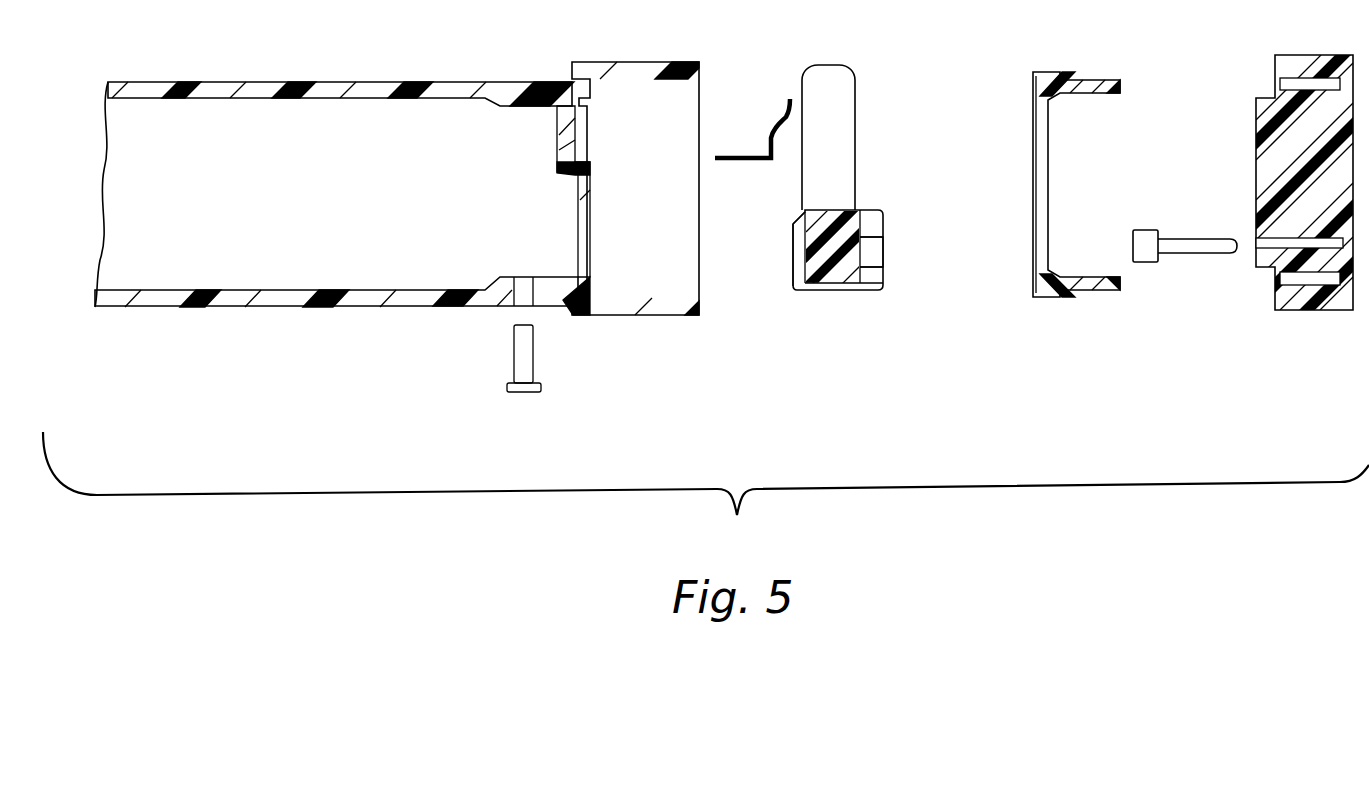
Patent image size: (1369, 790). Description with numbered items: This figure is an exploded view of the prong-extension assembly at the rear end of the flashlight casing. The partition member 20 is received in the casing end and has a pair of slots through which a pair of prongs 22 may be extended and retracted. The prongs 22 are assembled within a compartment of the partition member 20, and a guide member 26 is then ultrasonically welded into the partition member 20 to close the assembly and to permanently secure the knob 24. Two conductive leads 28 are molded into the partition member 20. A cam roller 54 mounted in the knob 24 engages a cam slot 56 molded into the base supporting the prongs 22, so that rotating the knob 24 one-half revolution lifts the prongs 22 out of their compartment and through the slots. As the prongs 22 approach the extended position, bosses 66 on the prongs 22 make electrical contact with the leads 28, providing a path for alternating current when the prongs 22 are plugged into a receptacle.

The partition member 20 is at (320, 80).
The prongs 22 is at (820, 75).
The knob 24 is at (1293, 53).
The guide member 26 is at (1070, 77).
The conductive leads 28 is at (743, 153).
The cam roller 54 is at (1195, 210).
The cam slot 56 is at (883, 250).
The bosses 66 is at (798, 240).